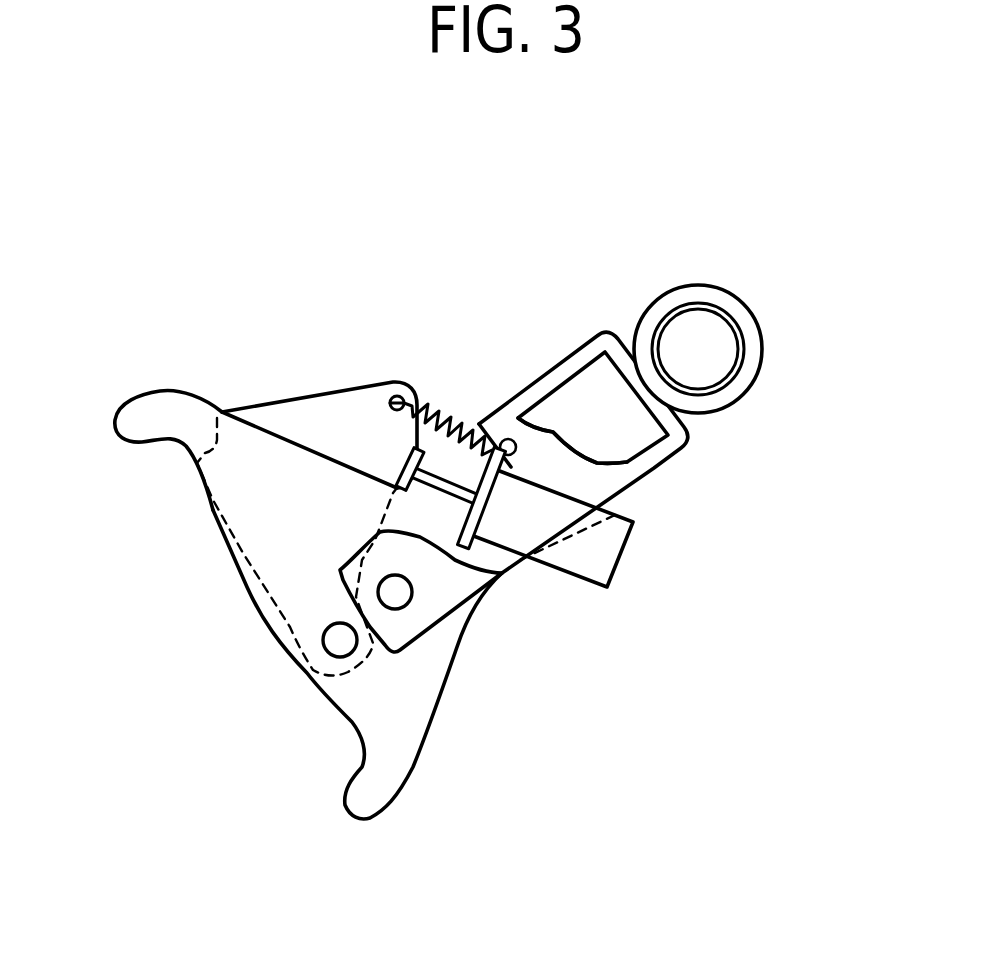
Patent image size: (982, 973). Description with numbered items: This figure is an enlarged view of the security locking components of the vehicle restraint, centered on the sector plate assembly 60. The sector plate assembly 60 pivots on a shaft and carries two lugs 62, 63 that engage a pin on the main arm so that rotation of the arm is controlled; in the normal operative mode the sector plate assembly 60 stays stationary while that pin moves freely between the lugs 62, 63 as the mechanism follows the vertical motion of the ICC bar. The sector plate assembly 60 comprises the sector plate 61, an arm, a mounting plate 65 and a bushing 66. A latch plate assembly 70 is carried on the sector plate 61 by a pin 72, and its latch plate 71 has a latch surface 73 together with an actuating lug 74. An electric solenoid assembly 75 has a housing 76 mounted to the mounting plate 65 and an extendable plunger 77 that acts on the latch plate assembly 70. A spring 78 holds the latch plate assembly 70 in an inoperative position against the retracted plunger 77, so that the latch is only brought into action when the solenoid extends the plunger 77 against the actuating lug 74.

The sector plate assembly 60 is at (676, 452).
The sector plate 61 is at (676, 452).
The lug 62 is at (113, 421).
The lug 63 is at (278, 556).
The mounting plate 65 is at (477, 545).
The bushing 66 is at (752, 308).
The latch plate assembly 70 is at (298, 372).
The latch plate 71 is at (250, 403).
The pin 72 is at (323, 640).
The latch surface 73 is at (207, 452).
The actuating lug 74 is at (384, 450).
The electric solenoid assembly 75 is at (635, 538).
The housing 76 is at (622, 547).
The extendable plunger 77 is at (433, 425).
The spring 78 is at (453, 425).